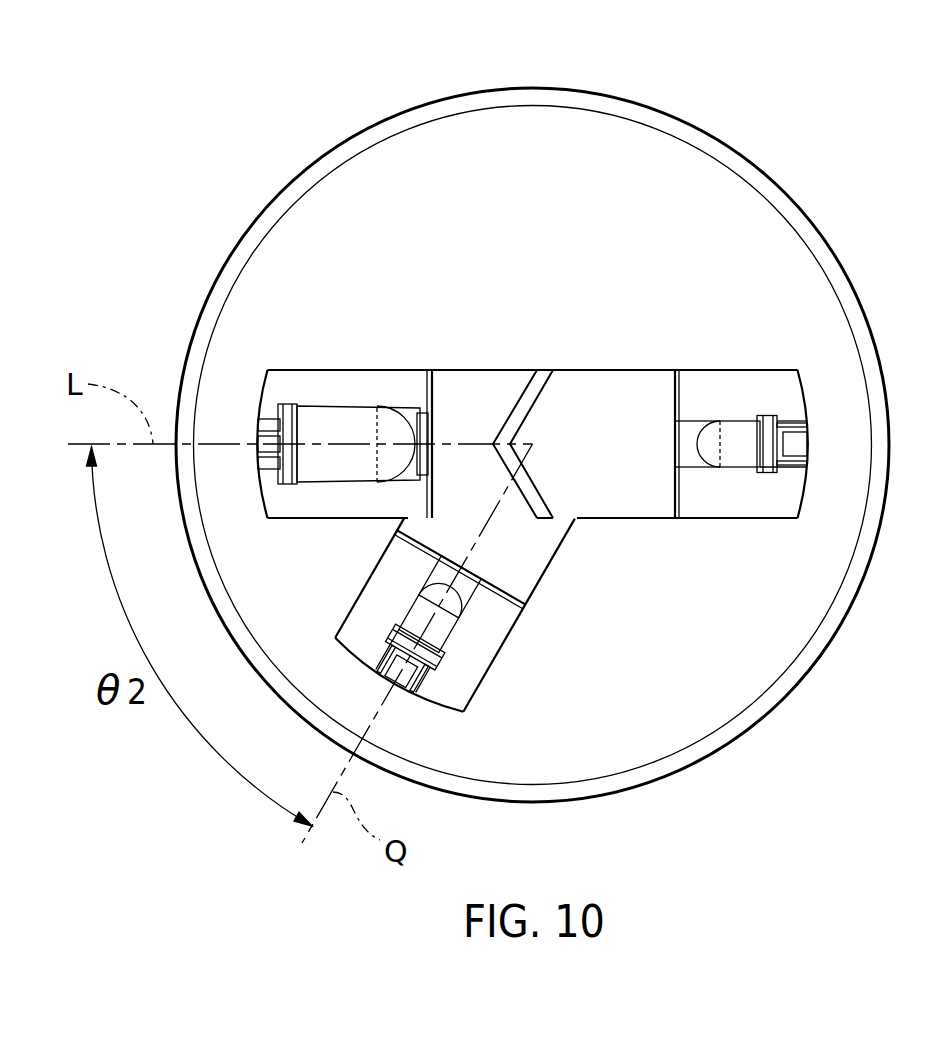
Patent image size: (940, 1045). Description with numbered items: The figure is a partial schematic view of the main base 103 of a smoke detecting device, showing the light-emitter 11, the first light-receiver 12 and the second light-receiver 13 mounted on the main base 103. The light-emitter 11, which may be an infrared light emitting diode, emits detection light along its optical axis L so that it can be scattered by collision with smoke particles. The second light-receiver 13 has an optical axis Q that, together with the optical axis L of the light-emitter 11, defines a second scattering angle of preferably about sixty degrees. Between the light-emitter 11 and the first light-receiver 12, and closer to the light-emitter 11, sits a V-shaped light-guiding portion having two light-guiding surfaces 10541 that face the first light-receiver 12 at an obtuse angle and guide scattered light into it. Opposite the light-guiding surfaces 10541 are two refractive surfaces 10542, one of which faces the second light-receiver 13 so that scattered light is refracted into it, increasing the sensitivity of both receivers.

The main base 103 is at (794, 206).
The light-emitter 11 is at (336, 425).
The first light-receiver 12 is at (738, 443).
The second light-receiver 13 is at (443, 630).
The light-guiding surfaces 10541 is at (540, 393).
The refractive surfaces 10542 is at (513, 407).